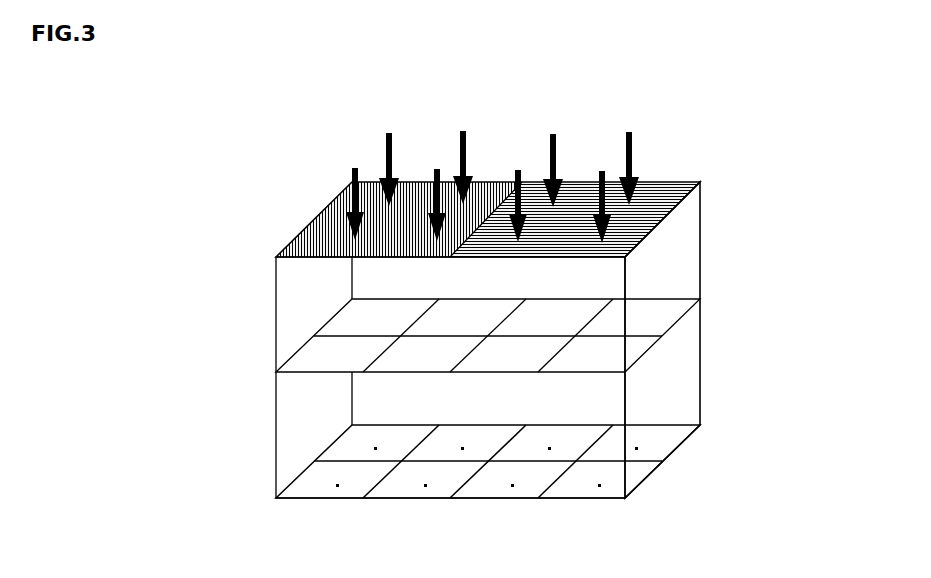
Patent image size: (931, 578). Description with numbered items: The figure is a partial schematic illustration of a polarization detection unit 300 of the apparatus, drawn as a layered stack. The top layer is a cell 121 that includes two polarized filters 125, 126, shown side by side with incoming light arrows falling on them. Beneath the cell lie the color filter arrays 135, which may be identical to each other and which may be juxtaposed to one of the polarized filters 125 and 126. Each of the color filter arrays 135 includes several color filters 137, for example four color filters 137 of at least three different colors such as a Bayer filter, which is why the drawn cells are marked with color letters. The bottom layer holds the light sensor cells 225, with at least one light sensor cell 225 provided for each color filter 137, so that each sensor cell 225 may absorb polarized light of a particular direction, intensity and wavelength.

The polarization detection unit 300 is at (640, 93).
The cell 121 is at (683, 200).
The polarized filter 126 is at (413, 210).
The polarized filter 125 is at (579, 216).
The color filter array 135 is at (663, 336).
The color filter 137 is at (406, 363).
The light sensor cell 225 is at (406, 485).